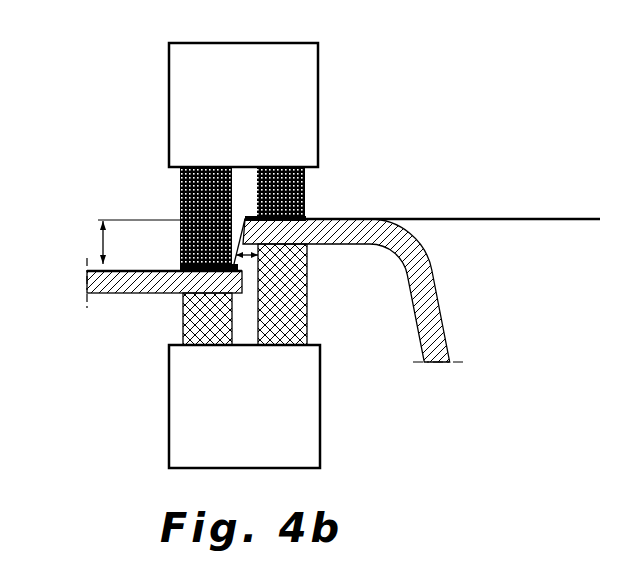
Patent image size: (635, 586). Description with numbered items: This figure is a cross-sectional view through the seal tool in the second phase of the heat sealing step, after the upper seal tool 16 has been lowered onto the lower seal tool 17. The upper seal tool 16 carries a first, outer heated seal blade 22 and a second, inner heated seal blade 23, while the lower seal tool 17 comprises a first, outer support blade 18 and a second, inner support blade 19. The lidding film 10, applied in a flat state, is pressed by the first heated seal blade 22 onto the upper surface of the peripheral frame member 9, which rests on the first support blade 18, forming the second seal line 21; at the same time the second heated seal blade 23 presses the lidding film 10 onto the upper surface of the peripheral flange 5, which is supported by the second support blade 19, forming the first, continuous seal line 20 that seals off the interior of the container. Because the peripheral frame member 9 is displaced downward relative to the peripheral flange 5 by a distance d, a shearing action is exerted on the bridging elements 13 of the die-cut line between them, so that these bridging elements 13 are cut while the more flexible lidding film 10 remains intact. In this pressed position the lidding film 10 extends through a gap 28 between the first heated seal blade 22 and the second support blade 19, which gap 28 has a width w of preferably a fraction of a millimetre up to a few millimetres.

The upper seal tool 16 is at (334, 102).
The lower seal tool 17 is at (328, 429).
The first heated seal blade 22 is at (180, 193).
The second heated seal blade 23 is at (307, 177).
The second seal line 21 is at (180, 265).
The first seal line 20 is at (305, 218).
The lidding film 10 is at (455, 218).
The peripheral flange 5 is at (350, 226).
The gap 28 is at (244, 260).
The width of the gap w is at (258, 256).
The bridging elements 13 is at (258, 298).
The first support blade 18 is at (190, 328).
The peripheral frame member 9 is at (132, 282).
The second support blade 19 is at (243, 293).
The distance d is at (130, 242).